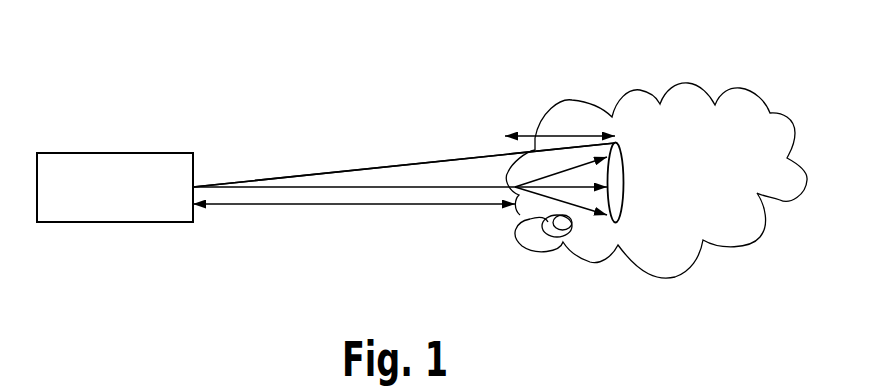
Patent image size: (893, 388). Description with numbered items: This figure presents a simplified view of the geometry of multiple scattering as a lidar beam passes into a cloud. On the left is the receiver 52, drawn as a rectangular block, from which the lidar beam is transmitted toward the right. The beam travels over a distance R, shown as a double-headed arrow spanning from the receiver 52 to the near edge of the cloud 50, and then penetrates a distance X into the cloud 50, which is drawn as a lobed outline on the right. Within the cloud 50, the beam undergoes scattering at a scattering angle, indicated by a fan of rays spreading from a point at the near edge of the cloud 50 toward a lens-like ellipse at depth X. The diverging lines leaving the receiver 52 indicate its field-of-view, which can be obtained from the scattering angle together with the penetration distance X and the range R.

The receiver 52 is at (152, 153).
The cloud 50 is at (692, 263).
The distance R is at (354, 239).
The penetration distance X is at (560, 107).